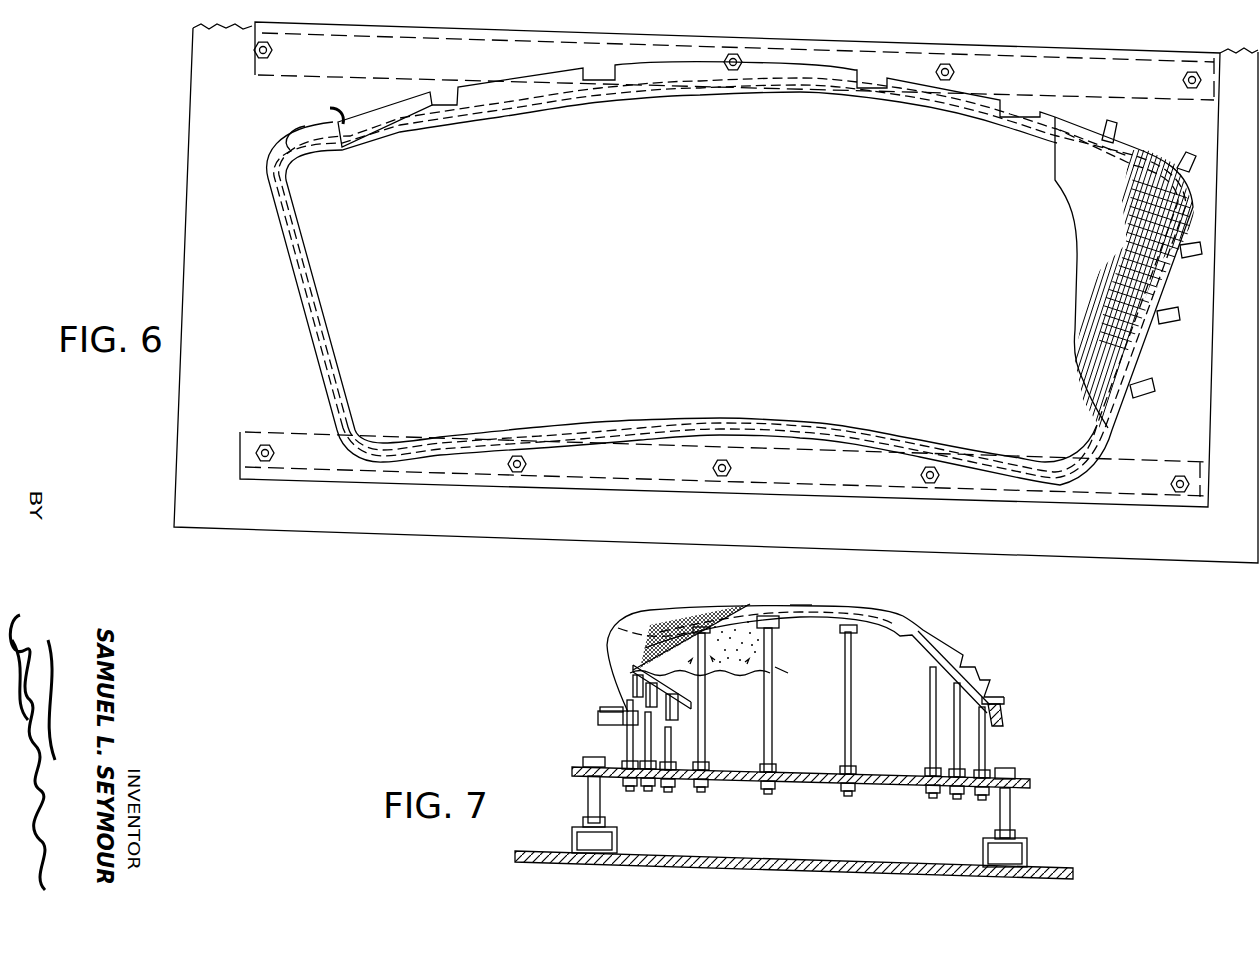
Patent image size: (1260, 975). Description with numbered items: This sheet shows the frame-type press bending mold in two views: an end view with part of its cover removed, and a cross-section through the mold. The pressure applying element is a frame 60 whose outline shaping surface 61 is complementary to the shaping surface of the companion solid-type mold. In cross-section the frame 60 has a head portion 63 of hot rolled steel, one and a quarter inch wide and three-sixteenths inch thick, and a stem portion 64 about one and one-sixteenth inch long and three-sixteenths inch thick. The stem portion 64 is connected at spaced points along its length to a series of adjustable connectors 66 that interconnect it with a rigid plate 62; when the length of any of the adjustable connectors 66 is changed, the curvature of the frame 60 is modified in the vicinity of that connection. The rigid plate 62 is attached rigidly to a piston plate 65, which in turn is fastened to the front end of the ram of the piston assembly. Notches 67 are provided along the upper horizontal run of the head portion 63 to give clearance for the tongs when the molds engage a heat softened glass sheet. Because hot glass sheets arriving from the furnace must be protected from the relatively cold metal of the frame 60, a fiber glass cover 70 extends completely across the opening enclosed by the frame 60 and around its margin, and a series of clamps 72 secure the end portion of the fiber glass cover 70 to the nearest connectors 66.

In FIG. 6, the frame 60 is at (328, 291).
In FIG. 7, the frame 60 is at (931, 624).
In FIG. 6, the outline shaping surface 61 is at (296, 157).
In FIG. 7, the outline shaping surface 61 is at (808, 608).
In FIG. 6, the rigid plate 62 is at (1194, 402).
In FIG. 7, the rigid plate 62 is at (873, 768).
In FIG. 6, the head portion 63 is at (335, 118).
In FIG. 7, the head portion 63 is at (1007, 700).
In FIG. 7, the stem portion 64 is at (1000, 718).
In FIG. 6, the piston plate 65 is at (1200, 556).
In FIG. 7, the piston plate 65 is at (842, 857).
In FIG. 7, the adjustable connectors 66 is at (845, 716).
In FIG. 6, the notches 67 is at (443, 102).
In FIG. 7, the notches 67 is at (963, 668).
In FIG. 6, the fiber glass cover 70 is at (1088, 265).
In FIG. 7, the fiber glass cover 70 is at (652, 632).
In FIG. 6, the clamps 72 is at (1178, 317).
In FIG. 7, the clamps 72 is at (598, 719).